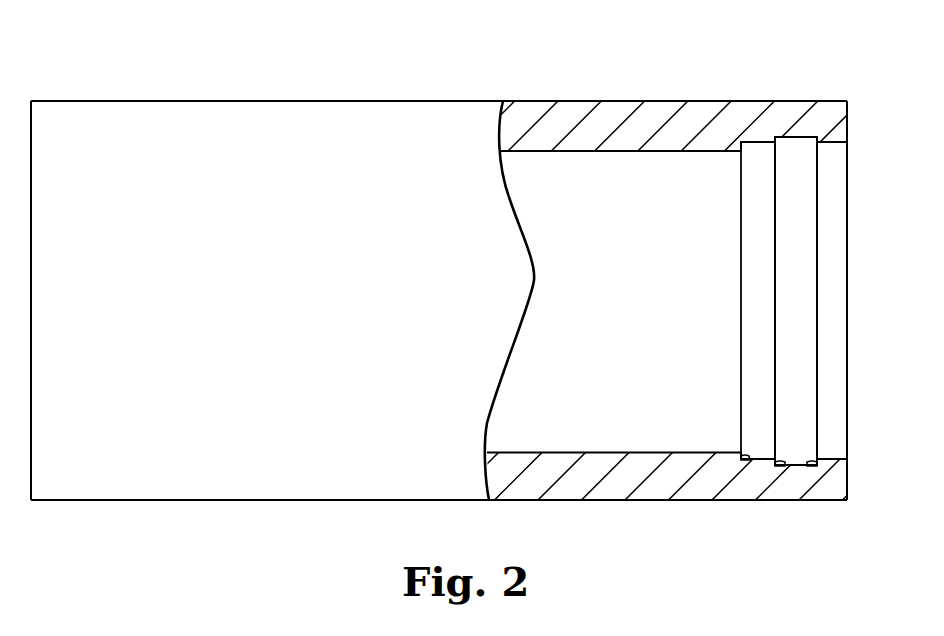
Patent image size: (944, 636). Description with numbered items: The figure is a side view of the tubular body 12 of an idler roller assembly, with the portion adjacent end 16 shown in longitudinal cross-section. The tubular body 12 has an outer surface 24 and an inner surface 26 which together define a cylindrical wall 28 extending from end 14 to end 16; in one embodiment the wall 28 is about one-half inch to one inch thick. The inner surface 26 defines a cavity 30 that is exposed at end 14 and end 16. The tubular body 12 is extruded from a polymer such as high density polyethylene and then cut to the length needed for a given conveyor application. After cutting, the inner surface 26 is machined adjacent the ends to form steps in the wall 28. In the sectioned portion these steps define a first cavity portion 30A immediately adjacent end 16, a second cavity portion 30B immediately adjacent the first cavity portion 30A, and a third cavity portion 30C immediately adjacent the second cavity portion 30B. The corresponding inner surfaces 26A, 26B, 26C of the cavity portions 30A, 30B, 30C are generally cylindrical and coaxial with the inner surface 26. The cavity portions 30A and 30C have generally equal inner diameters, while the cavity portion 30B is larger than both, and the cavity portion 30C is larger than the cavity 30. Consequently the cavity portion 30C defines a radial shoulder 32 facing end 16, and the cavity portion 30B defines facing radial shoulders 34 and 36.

The tubular body 12 is at (410, 102).
The end 14 is at (32, 124).
The end 16 is at (848, 127).
The outer surface 24 is at (248, 133).
The inner surface 26 is at (691, 274).
The inner surface of first cavity portion 26A is at (831, 150).
The inner surface of second cavity portion 26B is at (789, 138).
The inner surface of third cavity portion 26C is at (757, 144).
The cylindrical wall 28 is at (673, 127).
The cavity 30 is at (710, 187).
The first cavity portion 30A is at (833, 410).
The second cavity portion 30B is at (800, 337).
The third cavity portion 30C is at (753, 285).
The radial shoulder 32 is at (745, 460).
The radial shoulder 34 is at (787, 468).
The radial shoulder 36 is at (805, 462).